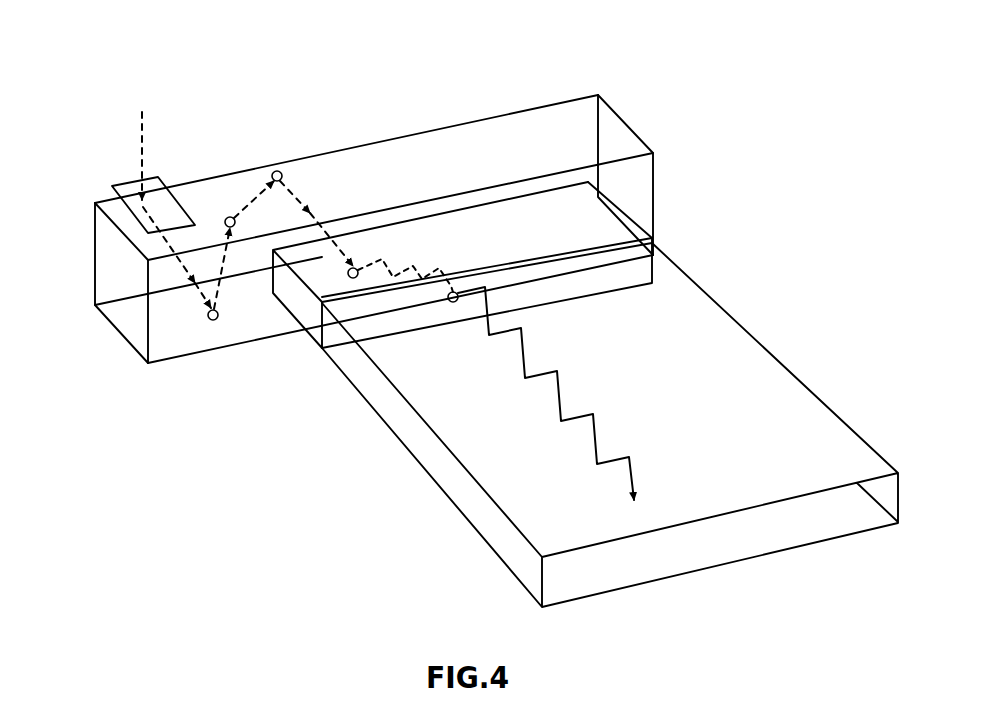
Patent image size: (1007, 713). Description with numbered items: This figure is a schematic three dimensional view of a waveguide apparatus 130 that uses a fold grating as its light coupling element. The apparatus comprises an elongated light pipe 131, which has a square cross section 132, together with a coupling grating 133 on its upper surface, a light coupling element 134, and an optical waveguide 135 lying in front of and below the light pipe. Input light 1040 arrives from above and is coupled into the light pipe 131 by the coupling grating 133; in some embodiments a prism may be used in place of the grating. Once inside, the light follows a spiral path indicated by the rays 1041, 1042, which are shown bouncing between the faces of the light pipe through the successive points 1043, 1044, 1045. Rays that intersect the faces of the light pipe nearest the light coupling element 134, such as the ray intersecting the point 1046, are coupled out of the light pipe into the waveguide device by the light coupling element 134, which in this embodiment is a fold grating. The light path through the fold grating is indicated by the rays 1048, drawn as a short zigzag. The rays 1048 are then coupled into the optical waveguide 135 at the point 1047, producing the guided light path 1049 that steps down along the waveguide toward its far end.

The optical module housing 130 is at (800, 62).
The light pipe 131 is at (655, 175).
The square cross section 132 is at (115, 258).
The coupling grating 133 is at (152, 177).
The light coupling element 134 is at (653, 240).
The optical waveguide 135 is at (752, 328).
The input light 1040 is at (172, 95).
The ray 1041 is at (196, 284).
The ray 1042 is at (313, 215).
The optical element 1043 is at (215, 320).
The optical element 1044 is at (232, 217).
The optical element 1045 is at (277, 171).
The point 1046 is at (353, 278).
The point 1047 is at (454, 302).
The rays 1048 is at (391, 277).
The guided light path 1049 is at (567, 388).